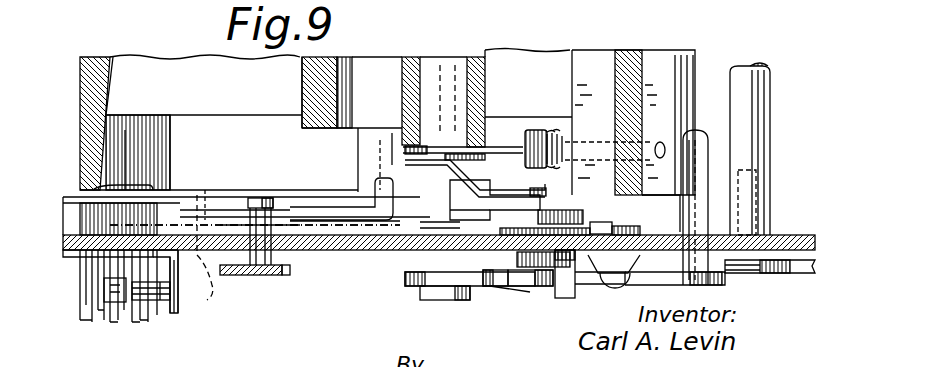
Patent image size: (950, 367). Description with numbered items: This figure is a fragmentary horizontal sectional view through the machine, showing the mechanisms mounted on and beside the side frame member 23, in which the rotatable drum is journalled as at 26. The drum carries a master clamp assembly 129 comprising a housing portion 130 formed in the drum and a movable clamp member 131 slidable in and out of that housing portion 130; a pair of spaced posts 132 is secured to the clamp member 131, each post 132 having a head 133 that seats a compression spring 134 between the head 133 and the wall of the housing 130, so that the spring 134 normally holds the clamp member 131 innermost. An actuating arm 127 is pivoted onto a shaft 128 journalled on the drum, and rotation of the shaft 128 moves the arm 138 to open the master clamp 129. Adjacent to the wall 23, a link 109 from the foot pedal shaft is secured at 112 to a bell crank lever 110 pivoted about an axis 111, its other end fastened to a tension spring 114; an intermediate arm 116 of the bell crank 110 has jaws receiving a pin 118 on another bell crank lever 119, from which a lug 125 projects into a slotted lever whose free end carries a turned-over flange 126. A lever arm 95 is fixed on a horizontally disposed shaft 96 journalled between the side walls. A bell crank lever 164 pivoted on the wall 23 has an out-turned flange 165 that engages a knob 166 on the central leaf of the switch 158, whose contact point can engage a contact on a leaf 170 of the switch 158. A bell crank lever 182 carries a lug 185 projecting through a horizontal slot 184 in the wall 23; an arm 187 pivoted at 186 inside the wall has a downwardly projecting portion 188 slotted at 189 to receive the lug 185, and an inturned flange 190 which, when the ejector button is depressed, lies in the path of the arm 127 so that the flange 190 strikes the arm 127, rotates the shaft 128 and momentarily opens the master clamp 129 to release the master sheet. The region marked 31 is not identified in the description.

The side frame member 23 is at (790, 236).
The drum journal 26 is at (380, 240).
The housing block 31 is at (365, 143).
The lever arm 95 is at (796, 275).
The shaft 96 is at (772, 150).
The link 109 is at (405, 274).
The bell crank lever 110 is at (482, 287).
The axis 111 is at (522, 290).
The link attachment 112 is at (425, 300).
The tension spring 114 is at (605, 286).
The intermediate arm 116 is at (515, 275).
The pin 118 is at (566, 290).
The bell crank lever 119 is at (668, 286).
The lug 125 is at (615, 228).
The turned-over flange 126 is at (501, 209).
The actuating arm 127 is at (450, 180).
The shaft 128 is at (437, 63).
The master clamp assembly 129 is at (667, 46).
The housing portion 130 is at (578, 58).
The movable clamp member 131 is at (665, 82).
The post 132 is at (585, 160).
The head 133 is at (537, 132).
The compression spring 134 is at (558, 140).
The arm 138 is at (487, 145).
The switch 158 is at (118, 326).
The bell crank lever 164 is at (188, 300).
The out-turned flange 165 is at (178, 308).
The knob 166 is at (163, 305).
The leaf 170 is at (105, 298).
The bell crank lever 182 is at (286, 277).
The horizontal slot 184 is at (157, 248).
The lug 185 is at (260, 198).
The pivot 186 is at (140, 184).
The arm 187 is at (318, 188).
The downwardly projecting portion 188 is at (284, 232).
The slot 189 is at (220, 178).
The inturned flange 190 is at (383, 188).